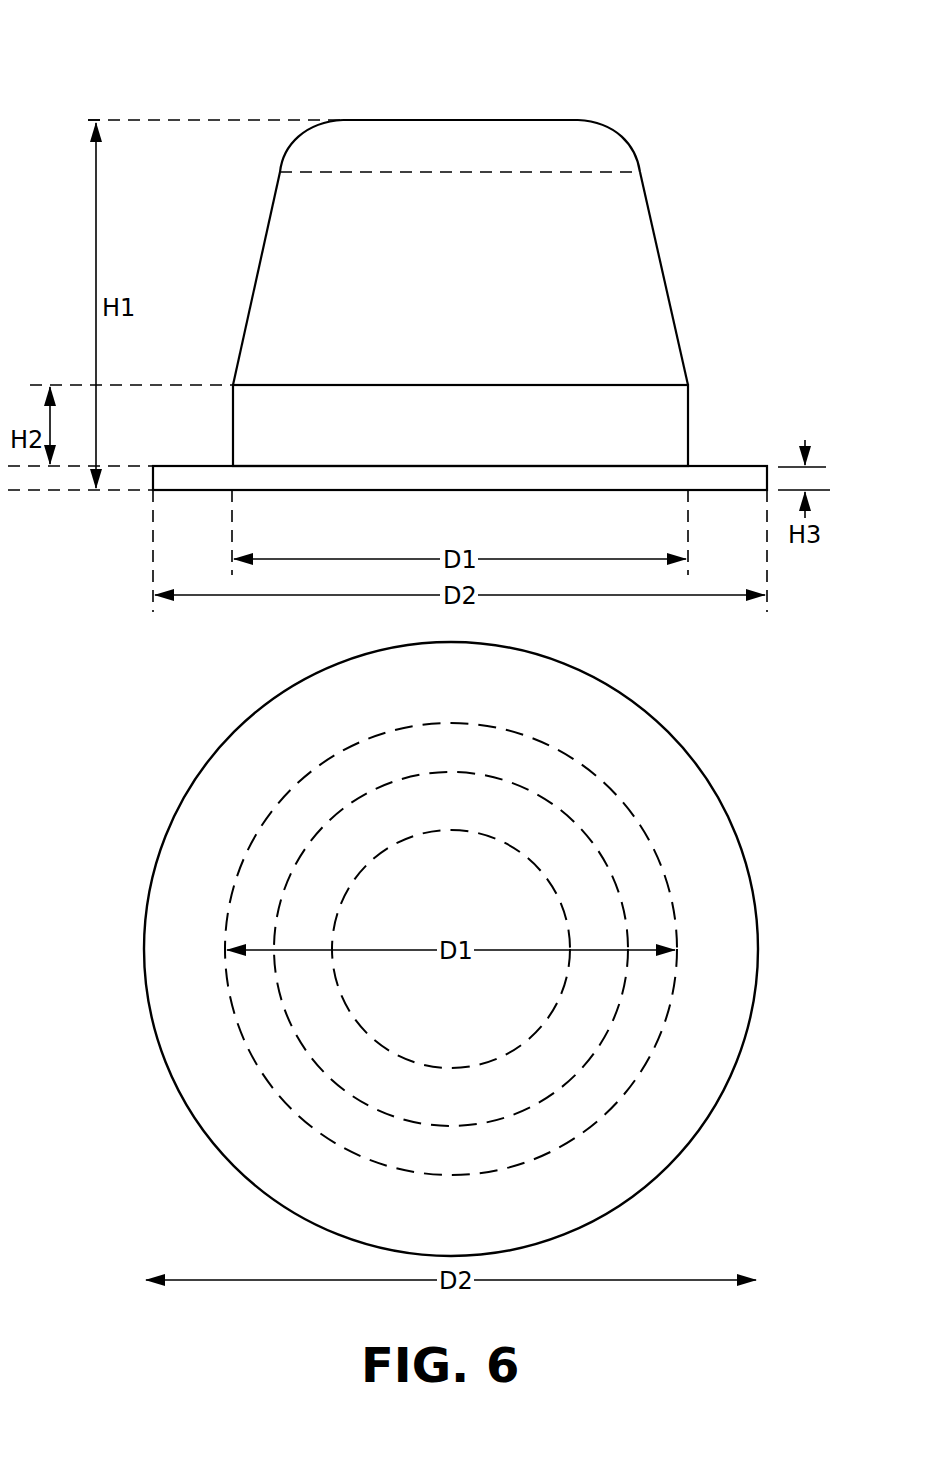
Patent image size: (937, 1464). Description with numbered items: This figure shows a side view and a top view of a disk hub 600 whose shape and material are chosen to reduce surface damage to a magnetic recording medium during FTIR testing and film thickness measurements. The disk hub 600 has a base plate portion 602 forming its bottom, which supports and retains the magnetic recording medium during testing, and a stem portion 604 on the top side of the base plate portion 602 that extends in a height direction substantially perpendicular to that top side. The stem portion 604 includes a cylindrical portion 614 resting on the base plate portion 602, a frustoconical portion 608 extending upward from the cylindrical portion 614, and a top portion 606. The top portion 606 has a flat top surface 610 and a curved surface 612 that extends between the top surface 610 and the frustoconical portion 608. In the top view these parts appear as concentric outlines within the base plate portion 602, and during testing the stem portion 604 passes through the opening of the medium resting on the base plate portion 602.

The disk hub 600 is at (94, 95).
The base plate portion 602 is at (186, 465).
The stem portion 604 is at (525, 617).
The top portion 606 is at (490, 592).
The frustoconical portion 608 is at (488, 302).
The top surface 610 is at (547, 117).
The curved surface 612 is at (622, 129).
The cylindrical portion 614 is at (494, 437).